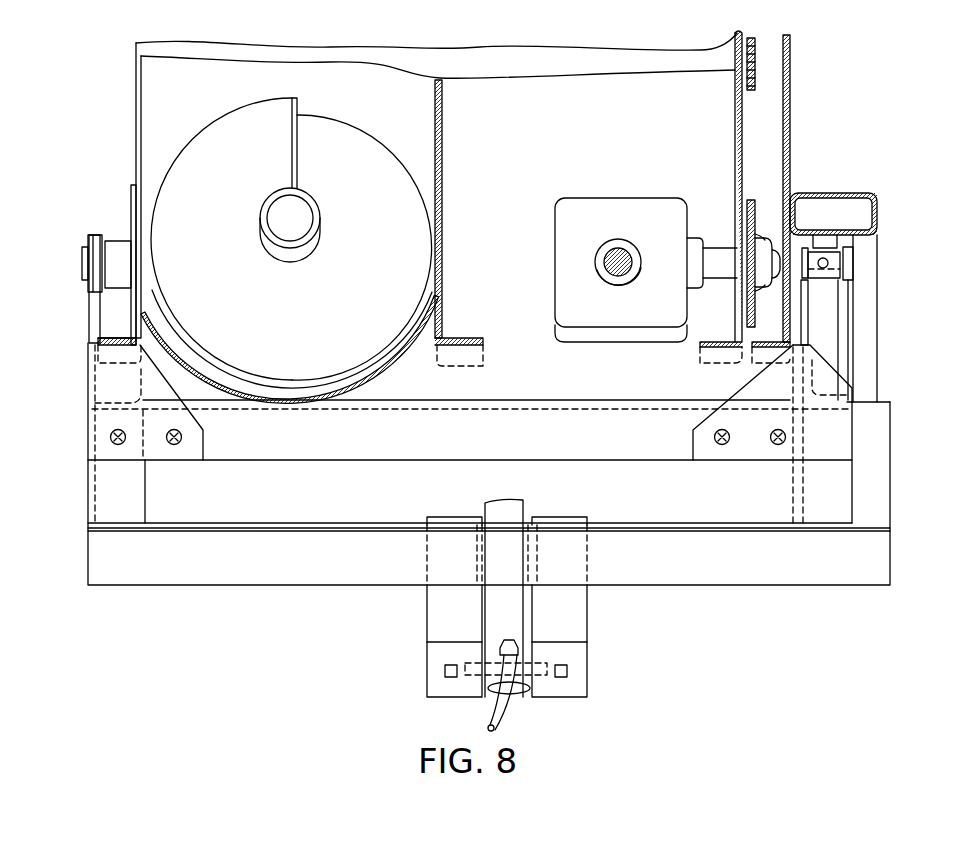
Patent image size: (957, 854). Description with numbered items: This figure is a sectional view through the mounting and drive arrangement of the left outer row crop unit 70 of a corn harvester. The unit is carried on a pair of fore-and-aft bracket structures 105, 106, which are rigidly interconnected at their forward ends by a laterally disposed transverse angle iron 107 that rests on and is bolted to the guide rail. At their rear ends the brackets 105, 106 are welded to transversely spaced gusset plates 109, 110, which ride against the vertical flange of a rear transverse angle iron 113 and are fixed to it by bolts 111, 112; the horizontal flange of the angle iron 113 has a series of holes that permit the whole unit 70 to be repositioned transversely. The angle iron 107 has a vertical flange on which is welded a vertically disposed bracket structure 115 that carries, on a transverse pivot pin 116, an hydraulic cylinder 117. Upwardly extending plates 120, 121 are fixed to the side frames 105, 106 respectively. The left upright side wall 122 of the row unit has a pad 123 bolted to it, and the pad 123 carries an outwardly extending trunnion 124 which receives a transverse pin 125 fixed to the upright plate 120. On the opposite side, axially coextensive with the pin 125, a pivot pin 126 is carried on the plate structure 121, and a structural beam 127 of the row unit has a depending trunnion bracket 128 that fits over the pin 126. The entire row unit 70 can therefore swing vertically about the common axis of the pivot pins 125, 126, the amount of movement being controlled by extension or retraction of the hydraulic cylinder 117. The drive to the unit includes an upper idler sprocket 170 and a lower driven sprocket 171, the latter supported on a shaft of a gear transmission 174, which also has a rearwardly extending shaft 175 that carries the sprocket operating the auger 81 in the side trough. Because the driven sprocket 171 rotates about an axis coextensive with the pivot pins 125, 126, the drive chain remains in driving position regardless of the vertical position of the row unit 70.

The outer row crop unit 70 is at (140, 50).
The auger 81 is at (380, 165).
The fore-and-aft bracket structure 105 is at (93, 385).
The fore-and-aft bracket structure 106 is at (812, 374).
The transverse angle iron 107 is at (280, 568).
The gusset plate 109 is at (117, 378).
The gusset plate 110 is at (752, 385).
The bolt 111 is at (170, 447).
The bolt 112 is at (772, 447).
The rear transverse angle iron 113 is at (392, 438).
The vertically disposed bracket structure 115 is at (575, 653).
The transverse pivot pin 116 is at (525, 697).
The hydraulic cylinder 117 is at (500, 610).
The upwardly extending plate 120 is at (90, 305).
The upwardly extending plate 121 is at (808, 322).
The left upright side wall 122 is at (138, 131).
The pad 123 is at (132, 202).
The trunnion 124 is at (117, 247).
The transverse pin 125 is at (83, 265).
The pivot pin 126 is at (853, 263).
The structural beam 127 is at (867, 279).
The trunnion bracket 128 is at (830, 243).
The upper idler sprocket 170 is at (760, 55).
The lower driven sprocket 171 is at (753, 203).
The gear transmission 174 is at (617, 208).
The rearwardly extending shaft 175 is at (598, 260).